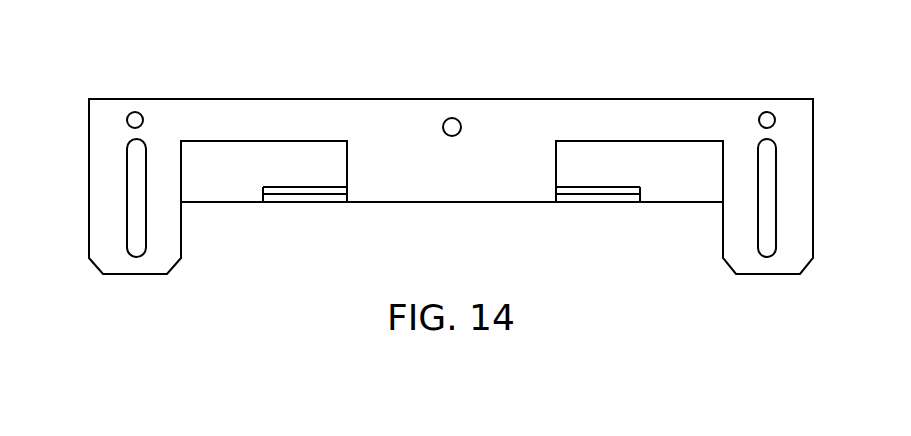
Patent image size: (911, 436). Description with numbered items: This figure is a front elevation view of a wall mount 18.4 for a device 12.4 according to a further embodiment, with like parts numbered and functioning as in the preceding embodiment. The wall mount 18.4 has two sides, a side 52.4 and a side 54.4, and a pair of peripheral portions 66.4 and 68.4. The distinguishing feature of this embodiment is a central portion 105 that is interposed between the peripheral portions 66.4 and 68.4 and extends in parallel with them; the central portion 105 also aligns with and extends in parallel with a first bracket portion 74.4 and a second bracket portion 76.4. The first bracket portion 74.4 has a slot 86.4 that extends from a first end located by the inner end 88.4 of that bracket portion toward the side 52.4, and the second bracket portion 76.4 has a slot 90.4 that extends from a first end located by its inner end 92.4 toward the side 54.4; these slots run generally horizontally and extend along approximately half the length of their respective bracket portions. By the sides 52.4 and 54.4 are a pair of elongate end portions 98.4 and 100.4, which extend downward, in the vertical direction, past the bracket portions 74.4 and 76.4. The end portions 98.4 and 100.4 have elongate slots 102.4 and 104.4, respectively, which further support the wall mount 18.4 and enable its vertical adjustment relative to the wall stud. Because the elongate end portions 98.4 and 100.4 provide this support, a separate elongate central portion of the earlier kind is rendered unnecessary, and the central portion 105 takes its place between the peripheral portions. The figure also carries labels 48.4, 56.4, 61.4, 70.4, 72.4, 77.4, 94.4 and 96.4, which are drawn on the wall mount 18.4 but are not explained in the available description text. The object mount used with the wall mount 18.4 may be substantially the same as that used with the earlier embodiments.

The device 12.4 is at (676, 51).
The wall mount 18.4 is at (744, 77).
The bar body 48.4 is at (318, 97).
The side of the wall mount 52.4 is at (89, 154).
The side of the wall mount 54.4 is at (813, 168).
The top wall 56.4 is at (513, 116).
The central aperture 61.4 is at (454, 118).
The peripheral portion 66.4 is at (248, 131).
The peripheral portion 68.4 is at (715, 131).
The first hole 70.4 is at (135, 112).
The second hole 72.4 is at (769, 112).
The first bracket portion 74.4 is at (240, 208).
The second bracket portion 76.4 is at (641, 208).
The bottom wall 77.4 is at (369, 208).
The slot 86.4 is at (296, 196).
The inner end of the first bracket portion 88.4 is at (347, 163).
The slot 90.4 is at (589, 196).
The inner end of the second bracket portion 92.4 is at (556, 162).
The first upper plate 94.4 is at (264, 187).
The second upper plate 96.4 is at (640, 187).
The elongate end portion 98.4 is at (99, 220).
The elongate end portion 100.4 is at (796, 226).
The elongate slot 102.4 is at (128, 240).
The elongate slot 104.4 is at (778, 242).
The central portion 105 is at (430, 182).